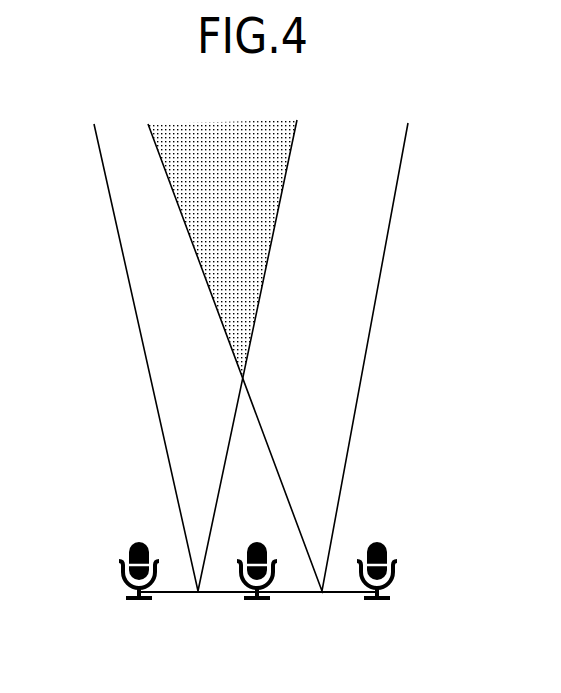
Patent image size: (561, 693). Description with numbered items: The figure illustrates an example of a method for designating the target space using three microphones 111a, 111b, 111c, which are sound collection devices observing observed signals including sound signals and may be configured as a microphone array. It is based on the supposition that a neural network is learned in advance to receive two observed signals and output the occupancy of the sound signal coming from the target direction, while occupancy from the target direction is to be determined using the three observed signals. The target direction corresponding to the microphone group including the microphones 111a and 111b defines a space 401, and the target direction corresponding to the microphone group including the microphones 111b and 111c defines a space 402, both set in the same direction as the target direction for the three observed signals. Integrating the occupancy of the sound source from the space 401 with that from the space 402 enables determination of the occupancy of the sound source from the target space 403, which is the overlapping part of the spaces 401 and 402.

The space 401 is at (150, 263).
The space 402 is at (367, 263).
The target space 403 is at (228, 140).
The microphone 111a is at (139, 601).
The microphone 111b is at (257, 601).
The microphone 111c is at (377, 601).